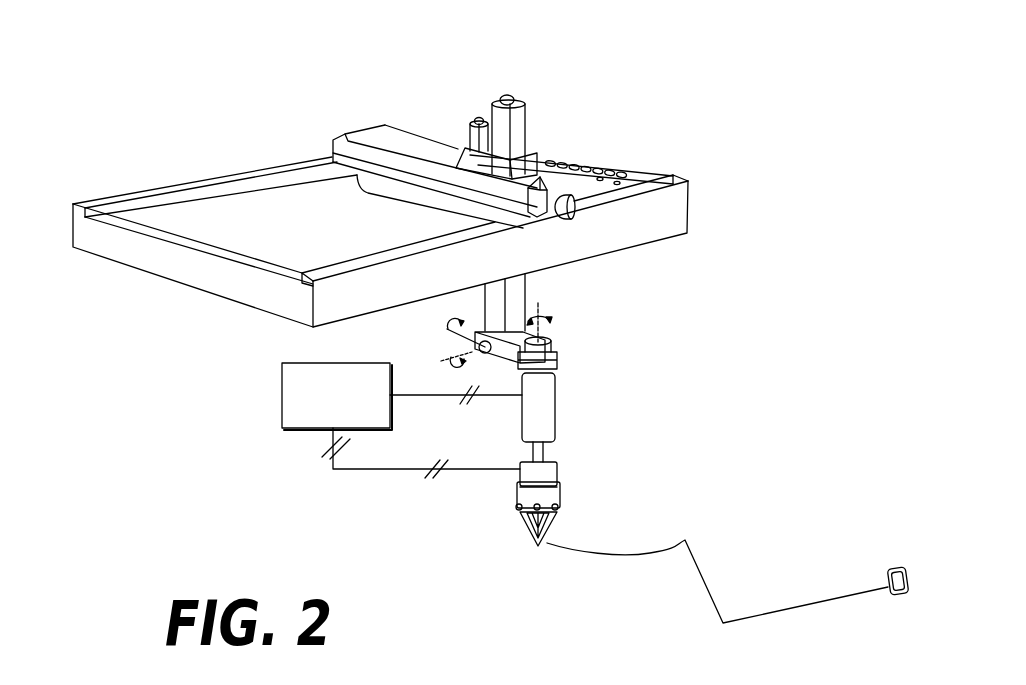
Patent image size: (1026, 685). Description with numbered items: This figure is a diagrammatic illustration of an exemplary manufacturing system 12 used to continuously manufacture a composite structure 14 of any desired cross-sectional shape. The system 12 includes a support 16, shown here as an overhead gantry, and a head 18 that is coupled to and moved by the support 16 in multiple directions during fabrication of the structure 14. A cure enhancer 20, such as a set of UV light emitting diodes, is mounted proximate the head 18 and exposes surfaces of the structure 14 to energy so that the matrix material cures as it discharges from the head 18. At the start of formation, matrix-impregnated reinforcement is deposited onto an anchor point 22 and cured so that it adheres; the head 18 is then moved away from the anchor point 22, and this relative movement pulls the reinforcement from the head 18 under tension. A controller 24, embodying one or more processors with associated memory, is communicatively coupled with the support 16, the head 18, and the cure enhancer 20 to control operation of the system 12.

The system 12 is at (147, 130).
The composite structure 14 is at (685, 540).
The support 16 is at (680, 210).
The head 18 is at (543, 473).
The cure enhancer 20 is at (517, 505).
The anchor point 22 is at (893, 565).
The controller 24 is at (323, 408).